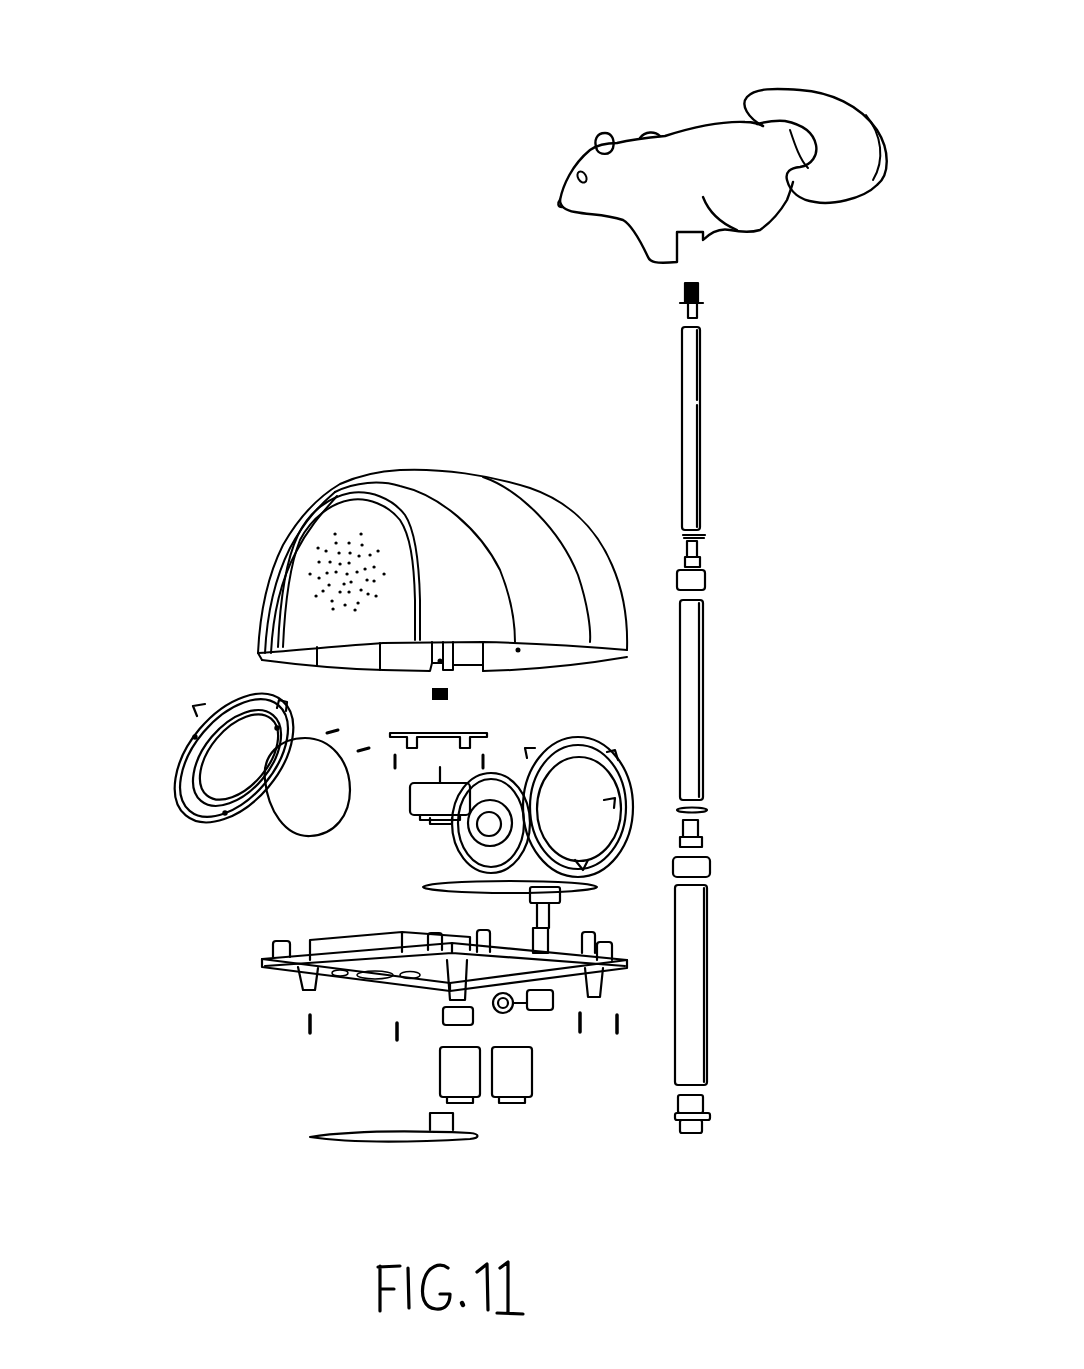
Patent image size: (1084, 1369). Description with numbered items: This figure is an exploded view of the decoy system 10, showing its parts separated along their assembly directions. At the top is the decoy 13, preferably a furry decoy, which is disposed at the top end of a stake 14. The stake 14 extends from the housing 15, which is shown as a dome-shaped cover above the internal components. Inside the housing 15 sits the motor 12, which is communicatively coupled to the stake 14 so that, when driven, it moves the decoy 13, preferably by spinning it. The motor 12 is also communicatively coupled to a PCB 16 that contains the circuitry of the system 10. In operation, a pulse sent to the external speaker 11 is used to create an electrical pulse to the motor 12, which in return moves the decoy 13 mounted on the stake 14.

The decoy system 10 is at (190, 203).
The external speaker 11 is at (518, 815).
The motor 12 is at (423, 815).
The decoy 13 is at (815, 80).
The stake 14 is at (830, 596).
The housing 15 is at (279, 460).
The PCB 16 is at (560, 899).